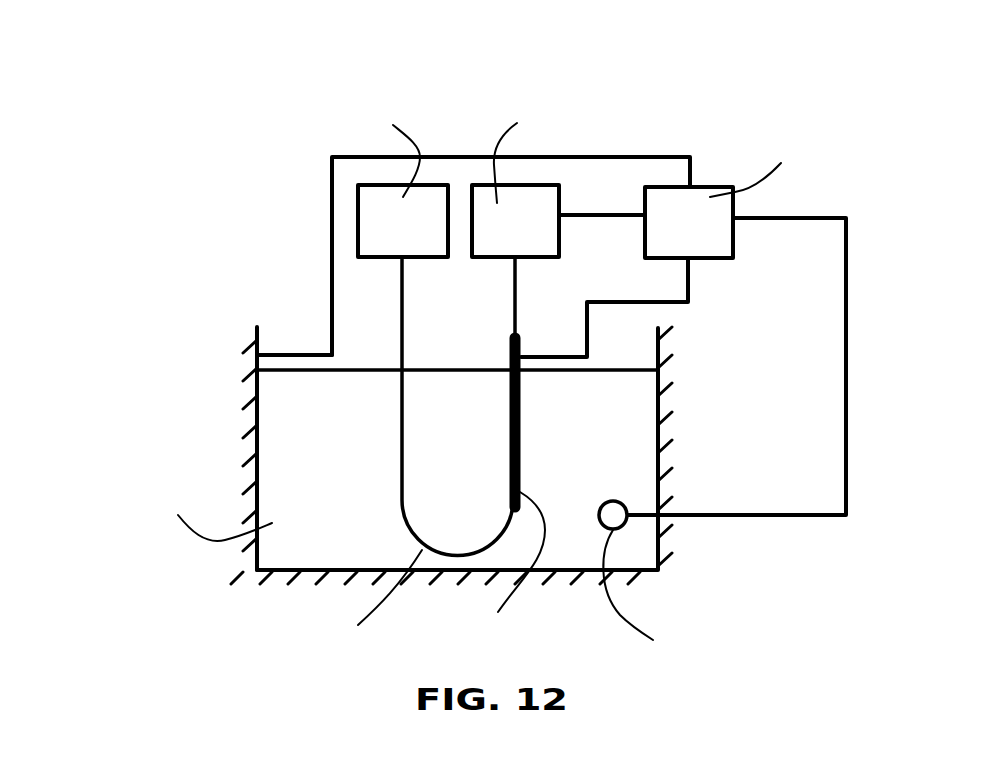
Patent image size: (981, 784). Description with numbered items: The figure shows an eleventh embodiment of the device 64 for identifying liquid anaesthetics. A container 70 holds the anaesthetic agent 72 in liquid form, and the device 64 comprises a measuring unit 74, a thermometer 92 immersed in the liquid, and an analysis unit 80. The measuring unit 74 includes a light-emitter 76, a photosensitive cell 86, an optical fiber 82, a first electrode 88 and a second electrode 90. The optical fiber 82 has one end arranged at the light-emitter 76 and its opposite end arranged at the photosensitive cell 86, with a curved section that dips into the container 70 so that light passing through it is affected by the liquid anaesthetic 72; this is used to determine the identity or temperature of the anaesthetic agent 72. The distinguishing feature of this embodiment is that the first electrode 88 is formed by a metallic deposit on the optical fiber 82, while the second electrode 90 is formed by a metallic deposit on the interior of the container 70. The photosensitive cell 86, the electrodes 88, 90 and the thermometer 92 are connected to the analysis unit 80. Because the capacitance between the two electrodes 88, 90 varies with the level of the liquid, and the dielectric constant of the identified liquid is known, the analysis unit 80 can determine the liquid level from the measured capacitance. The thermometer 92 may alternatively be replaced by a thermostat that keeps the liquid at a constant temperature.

The device 64 is at (441, 75).
The measuring unit 74 is at (259, 170).
The container 70 is at (660, 345).
The anaesthetic agent 72 is at (628, 458).
The light-emitter 76 is at (364, 166).
The photosensitive cell 86 is at (552, 158).
The analysis unit 80 is at (721, 324).
The optical fiber 82 is at (417, 542).
The first electrode 88 is at (521, 431).
The second electrode 90 is at (248, 413).
The thermometer 92 is at (622, 528).